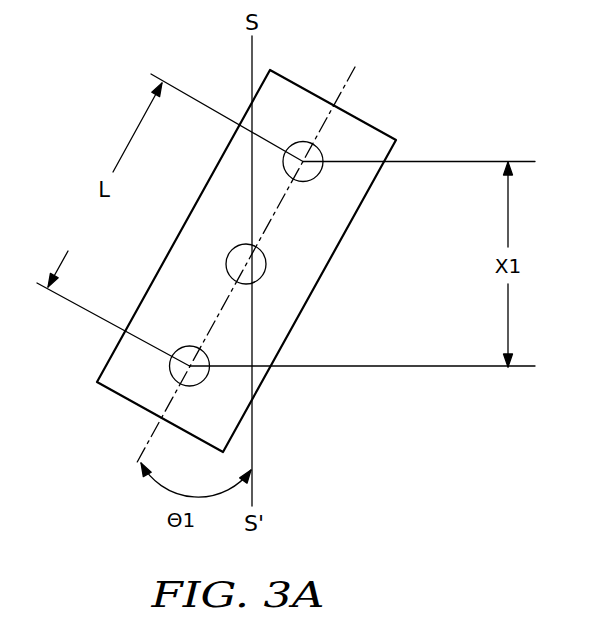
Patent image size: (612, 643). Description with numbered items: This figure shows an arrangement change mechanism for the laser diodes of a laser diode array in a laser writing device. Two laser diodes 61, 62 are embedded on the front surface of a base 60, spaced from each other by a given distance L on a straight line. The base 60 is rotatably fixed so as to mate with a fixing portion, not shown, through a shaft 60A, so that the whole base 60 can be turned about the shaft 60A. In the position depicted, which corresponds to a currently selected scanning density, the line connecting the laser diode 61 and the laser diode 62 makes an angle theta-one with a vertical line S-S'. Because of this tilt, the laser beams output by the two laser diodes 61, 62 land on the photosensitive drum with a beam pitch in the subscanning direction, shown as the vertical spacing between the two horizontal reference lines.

The base 60 is at (372, 148).
The laser diode 61 is at (302, 141).
The shaft 60A is at (267, 270).
The laser diode 62 is at (168, 378).